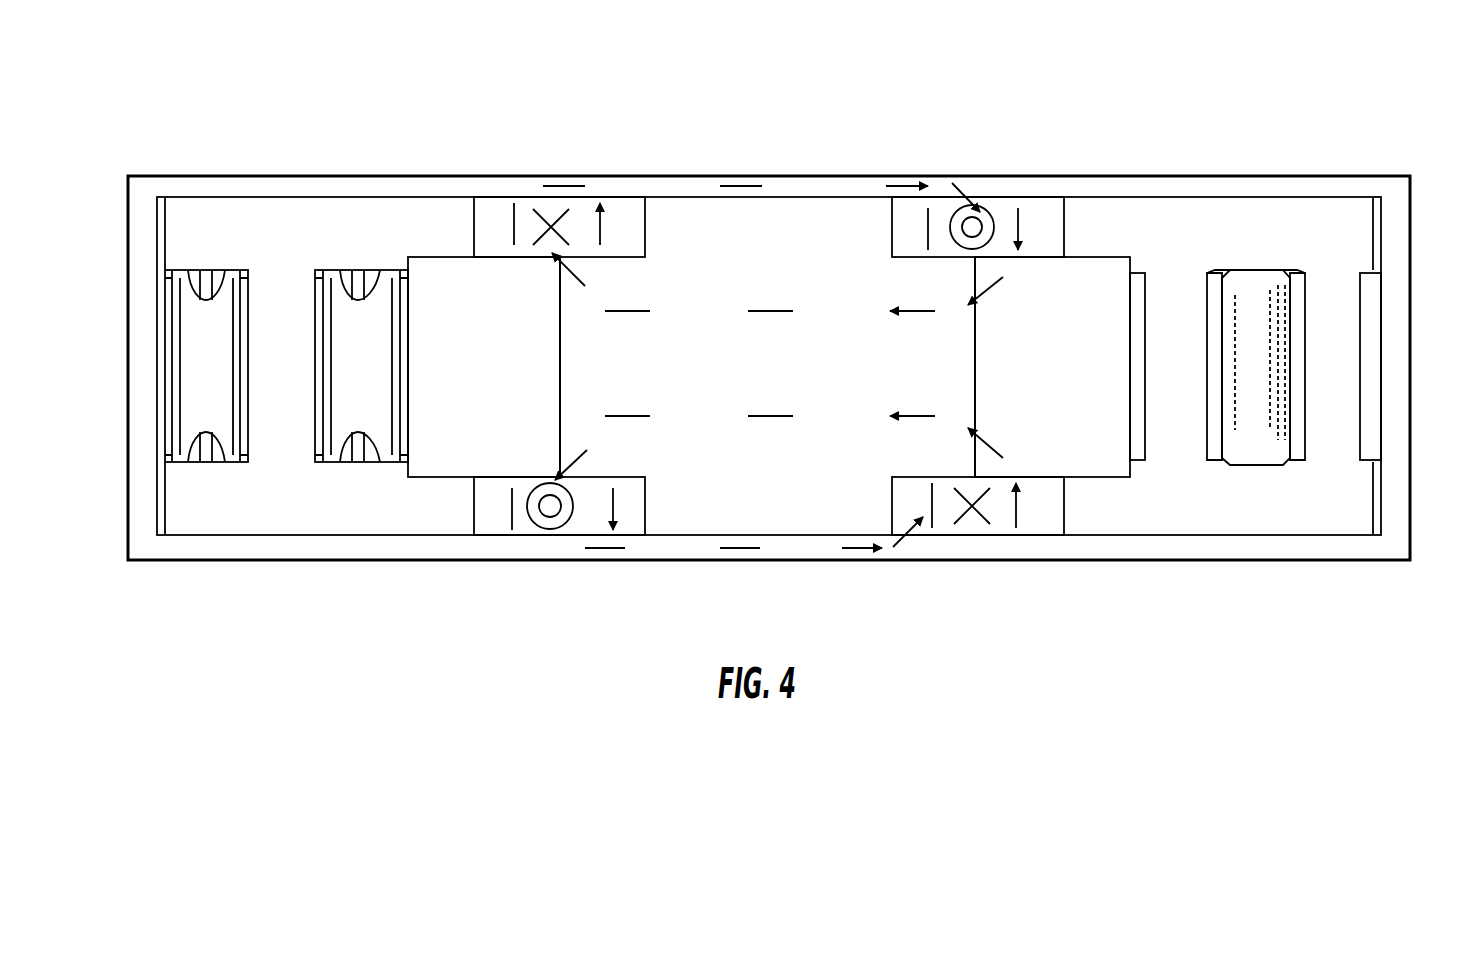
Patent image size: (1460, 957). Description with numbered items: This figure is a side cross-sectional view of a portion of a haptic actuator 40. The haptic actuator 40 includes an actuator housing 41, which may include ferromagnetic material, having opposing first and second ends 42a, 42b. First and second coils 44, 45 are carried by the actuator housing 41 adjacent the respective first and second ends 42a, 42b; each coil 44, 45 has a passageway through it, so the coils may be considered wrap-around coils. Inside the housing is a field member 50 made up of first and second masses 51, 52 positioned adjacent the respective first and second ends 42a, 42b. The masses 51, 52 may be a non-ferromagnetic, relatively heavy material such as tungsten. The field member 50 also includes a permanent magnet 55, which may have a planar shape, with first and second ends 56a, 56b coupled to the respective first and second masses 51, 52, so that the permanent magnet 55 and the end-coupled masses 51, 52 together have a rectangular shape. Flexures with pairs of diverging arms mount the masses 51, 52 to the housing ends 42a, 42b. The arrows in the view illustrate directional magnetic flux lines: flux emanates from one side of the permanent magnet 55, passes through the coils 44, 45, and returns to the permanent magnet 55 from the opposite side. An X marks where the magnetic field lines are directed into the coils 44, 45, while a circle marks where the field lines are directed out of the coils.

The haptic actuator 40 is at (326, 85).
The actuator housing 41 is at (245, 188).
The first end 42a is at (137, 198).
The second end 42b is at (1393, 240).
The first coil 44 is at (493, 221).
The second coil 45 is at (1037, 512).
The field member 50 is at (708, 497).
The first mass 51 is at (457, 478).
The second mass 52 is at (1060, 305).
The permanent magnet 55 is at (800, 305).
The first end of the permanent magnet 56a is at (562, 420).
The second end of the permanent magnet 56b is at (975, 412).